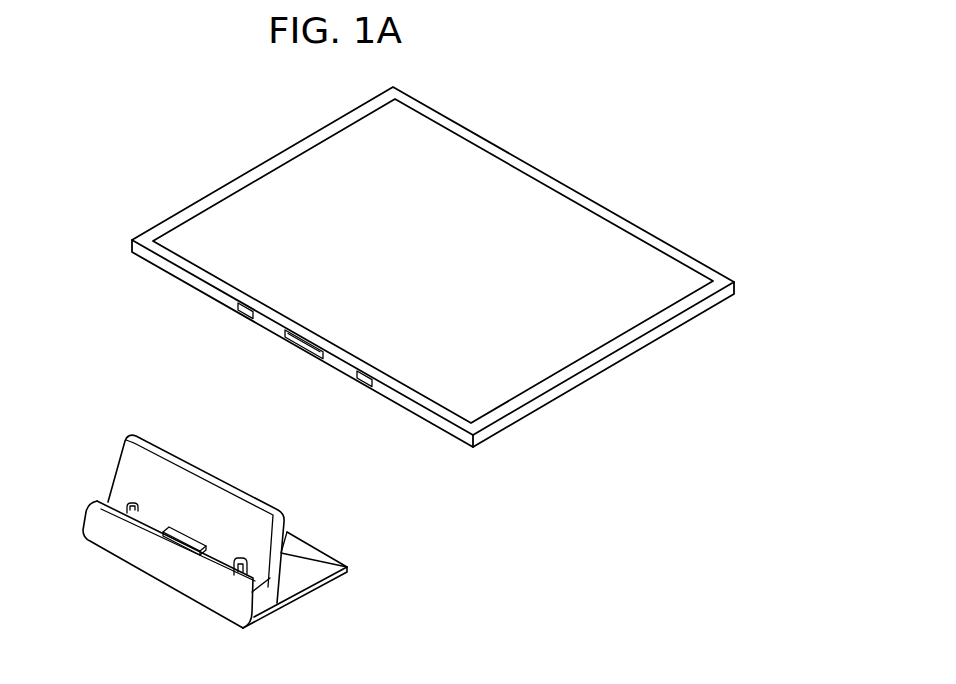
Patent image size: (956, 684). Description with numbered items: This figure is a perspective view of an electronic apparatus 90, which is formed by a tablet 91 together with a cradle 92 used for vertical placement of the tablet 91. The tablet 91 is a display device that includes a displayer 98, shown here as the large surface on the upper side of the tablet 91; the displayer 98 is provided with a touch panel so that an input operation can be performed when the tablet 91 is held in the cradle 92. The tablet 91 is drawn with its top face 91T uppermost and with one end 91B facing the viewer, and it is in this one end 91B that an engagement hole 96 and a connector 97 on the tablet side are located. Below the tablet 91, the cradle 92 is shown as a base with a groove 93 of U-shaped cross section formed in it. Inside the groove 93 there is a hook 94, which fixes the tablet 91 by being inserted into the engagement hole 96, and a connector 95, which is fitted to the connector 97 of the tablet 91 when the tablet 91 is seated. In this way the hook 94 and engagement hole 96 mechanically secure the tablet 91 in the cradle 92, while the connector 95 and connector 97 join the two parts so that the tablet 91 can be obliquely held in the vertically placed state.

The electronic apparatus 90 is at (100, 185).
The tablet 91 is at (572, 392).
The top surface of tablet 91T is at (588, 197).
The one end of the tablet 91B is at (188, 278).
The displayer 98 is at (325, 173).
The connector 97 is at (303, 347).
The engagement hole 96 is at (363, 387).
The cradle 92 is at (300, 607).
The groove 93 is at (107, 498).
The hook 94 is at (132, 498).
The connector 95 is at (188, 535).